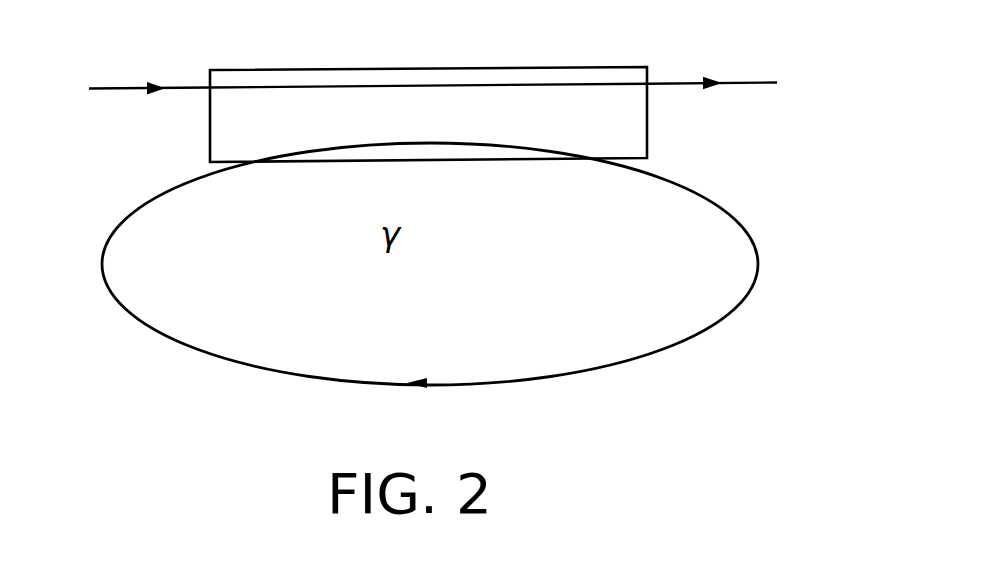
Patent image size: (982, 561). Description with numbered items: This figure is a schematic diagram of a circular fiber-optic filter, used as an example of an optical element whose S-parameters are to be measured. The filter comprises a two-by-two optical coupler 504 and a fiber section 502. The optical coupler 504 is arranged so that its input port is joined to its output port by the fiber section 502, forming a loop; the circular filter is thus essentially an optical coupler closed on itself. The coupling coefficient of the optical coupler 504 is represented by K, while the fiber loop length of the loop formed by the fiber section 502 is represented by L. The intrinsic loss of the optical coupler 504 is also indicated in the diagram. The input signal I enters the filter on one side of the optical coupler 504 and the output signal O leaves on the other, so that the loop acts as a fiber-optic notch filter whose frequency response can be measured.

The fiber section 502 is at (467, 265).
The two-by-two optical coupler 504 is at (499, 85).
The coupling coefficient K is at (428, 85).
The fiber loop length L is at (396, 265).
The input signal I is at (133, 84).
The output signal O is at (733, 84).